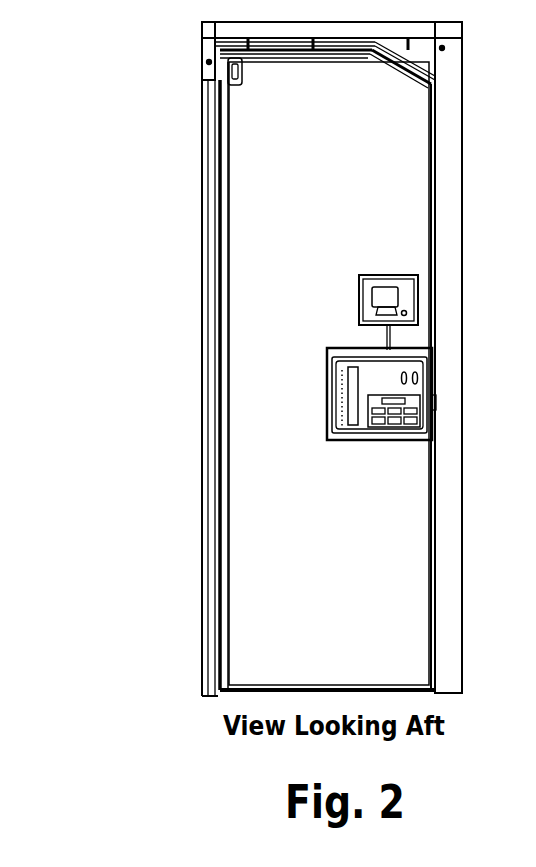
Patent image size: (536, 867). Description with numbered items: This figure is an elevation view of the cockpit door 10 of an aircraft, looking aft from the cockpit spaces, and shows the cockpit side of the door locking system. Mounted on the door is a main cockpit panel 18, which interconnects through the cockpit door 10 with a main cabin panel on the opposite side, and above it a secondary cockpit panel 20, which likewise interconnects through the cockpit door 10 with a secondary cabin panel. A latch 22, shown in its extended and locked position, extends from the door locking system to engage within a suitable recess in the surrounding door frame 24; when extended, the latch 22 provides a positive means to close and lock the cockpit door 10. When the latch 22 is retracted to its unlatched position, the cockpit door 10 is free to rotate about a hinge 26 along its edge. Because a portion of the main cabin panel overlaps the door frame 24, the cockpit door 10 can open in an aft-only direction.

The cockpit door 10 is at (134, 139).
The main cockpit panel 18 is at (342, 357).
The secondary cockpit panel 20 is at (365, 297).
The latch 22 is at (437, 402).
The door frame 24 is at (450, 141).
The hinge 26 is at (218, 522).